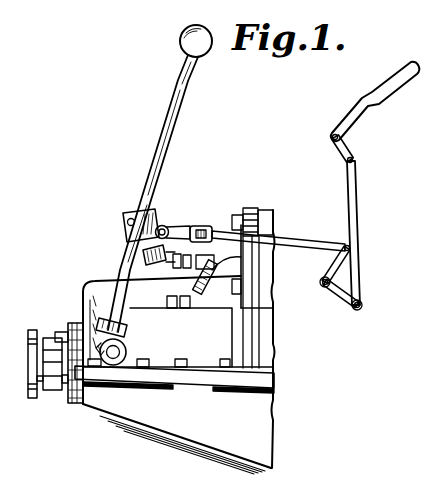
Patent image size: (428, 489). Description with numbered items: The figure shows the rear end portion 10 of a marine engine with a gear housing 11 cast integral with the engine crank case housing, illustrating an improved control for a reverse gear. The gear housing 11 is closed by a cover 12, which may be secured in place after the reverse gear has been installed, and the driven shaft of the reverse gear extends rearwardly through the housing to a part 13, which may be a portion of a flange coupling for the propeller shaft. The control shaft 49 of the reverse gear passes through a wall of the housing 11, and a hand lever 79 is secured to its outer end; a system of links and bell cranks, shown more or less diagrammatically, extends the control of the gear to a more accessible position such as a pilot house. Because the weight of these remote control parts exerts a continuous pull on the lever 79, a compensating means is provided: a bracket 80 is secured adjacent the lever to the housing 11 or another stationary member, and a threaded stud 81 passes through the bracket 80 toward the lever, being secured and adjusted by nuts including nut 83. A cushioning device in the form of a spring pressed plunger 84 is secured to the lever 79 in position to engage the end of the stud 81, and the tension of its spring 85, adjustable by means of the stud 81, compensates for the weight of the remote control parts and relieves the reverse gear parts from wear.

The rear end portion of marine engine 10 is at (265, 348).
The gear housing 11 is at (248, 428).
The cover 12 is at (190, 345).
The part of flange coupling 13 is at (33, 400).
The shaft 49 is at (116, 360).
The hand lever 79 is at (167, 164).
The bracket 80 is at (216, 307).
The threaded stud 81 is at (188, 243).
The nut 83 is at (215, 275).
The spring pressed plunger 84 is at (176, 253).
The spring 85 is at (124, 240).